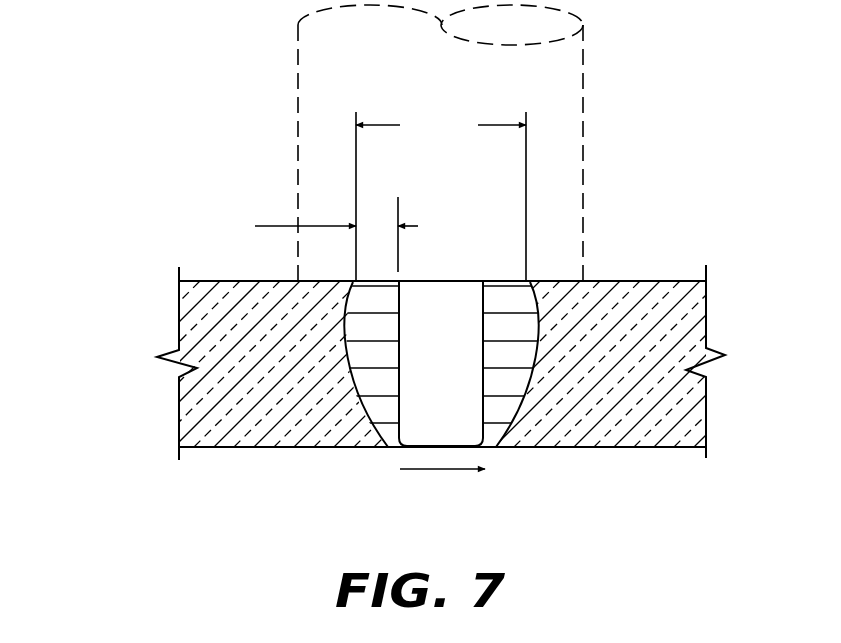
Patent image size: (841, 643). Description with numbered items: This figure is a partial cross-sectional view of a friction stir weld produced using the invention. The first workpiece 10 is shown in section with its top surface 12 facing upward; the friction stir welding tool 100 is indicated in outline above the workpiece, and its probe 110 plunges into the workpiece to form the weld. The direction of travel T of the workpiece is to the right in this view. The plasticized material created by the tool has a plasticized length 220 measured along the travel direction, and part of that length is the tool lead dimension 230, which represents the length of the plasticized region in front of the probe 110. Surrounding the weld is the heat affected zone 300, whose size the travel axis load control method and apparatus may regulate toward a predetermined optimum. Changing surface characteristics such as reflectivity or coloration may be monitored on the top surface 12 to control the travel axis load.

The first workpiece 10 is at (178, 350).
The top surface of the first workpiece 12 is at (216, 281).
The friction stir welding tool 100 is at (298, 32).
The probe 110 is at (483, 324).
The plasticized length 220 is at (441, 189).
The tool lead dimension 230 is at (297, 233).
The heat affected zone 300 is at (564, 447).
The direction of travel T is at (447, 470).